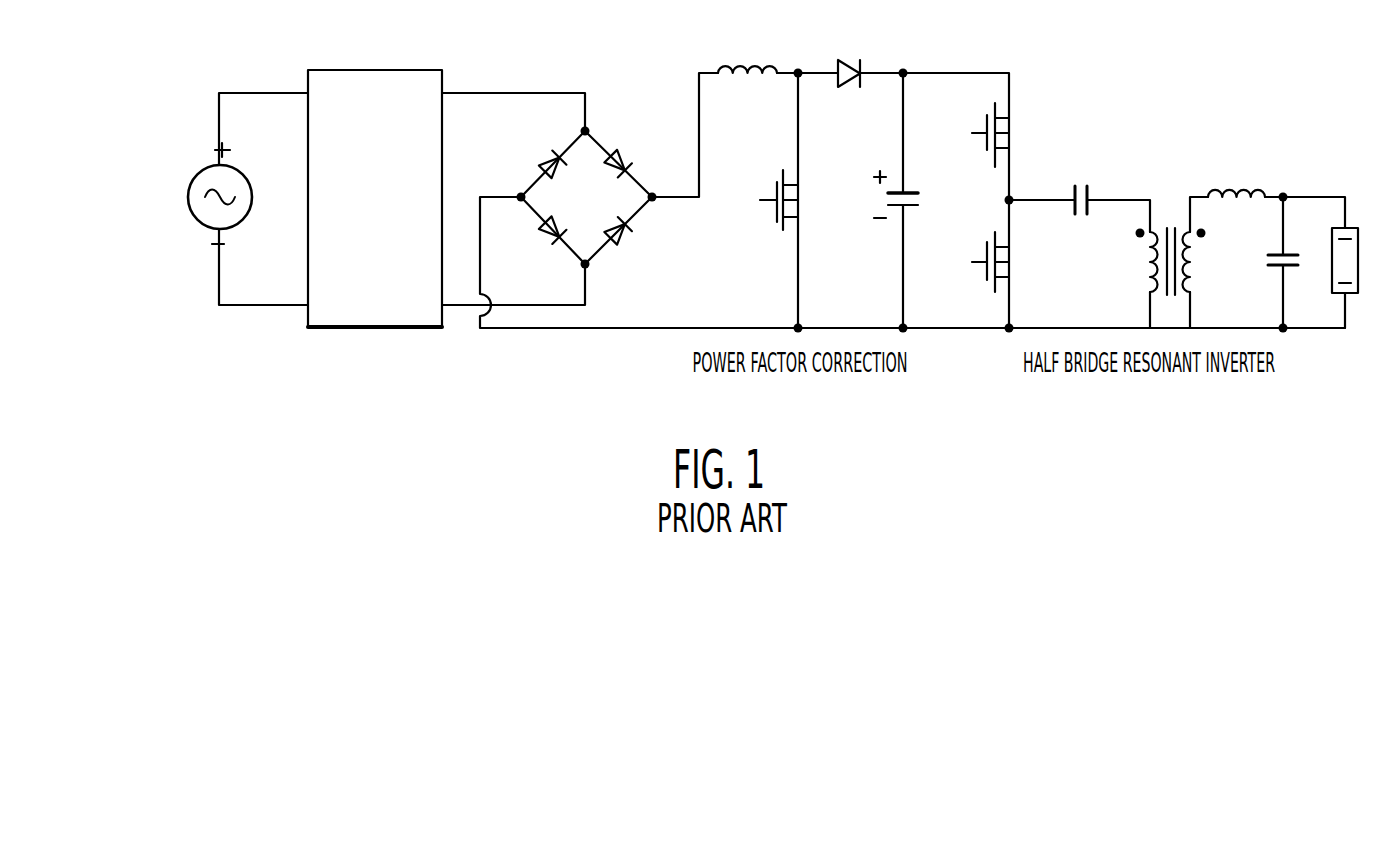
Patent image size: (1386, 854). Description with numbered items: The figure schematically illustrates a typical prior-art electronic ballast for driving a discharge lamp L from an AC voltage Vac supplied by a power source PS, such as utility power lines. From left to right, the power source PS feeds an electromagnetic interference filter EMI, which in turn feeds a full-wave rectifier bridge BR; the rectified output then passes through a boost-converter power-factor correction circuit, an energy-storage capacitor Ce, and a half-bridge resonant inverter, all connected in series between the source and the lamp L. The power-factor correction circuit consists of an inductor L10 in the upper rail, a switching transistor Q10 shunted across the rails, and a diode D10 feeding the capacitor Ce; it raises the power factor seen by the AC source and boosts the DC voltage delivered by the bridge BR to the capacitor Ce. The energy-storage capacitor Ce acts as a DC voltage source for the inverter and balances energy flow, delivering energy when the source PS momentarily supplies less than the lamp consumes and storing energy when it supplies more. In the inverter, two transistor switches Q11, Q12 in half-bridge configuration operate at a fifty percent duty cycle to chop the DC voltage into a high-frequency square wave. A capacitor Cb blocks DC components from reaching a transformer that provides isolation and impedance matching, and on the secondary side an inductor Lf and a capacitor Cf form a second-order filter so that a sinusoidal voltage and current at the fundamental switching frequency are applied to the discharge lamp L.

The power source PS is at (216, 181).
The AC voltage Vac is at (189, 193).
The electromagnetic interference filter EMI is at (375, 198).
The full-wave rectifier bridge BR is at (586, 197).
The inductor L10 is at (747, 50).
The diode D10 is at (852, 55).
The switching transistor Q10 is at (803, 200).
The energy-storage capacitor Ce is at (910, 200).
The transistor switch Q11 is at (1013, 135).
The transistor switch Q12 is at (1013, 262).
The capacitor Cb is at (1098, 189).
The inductor Lf is at (1236, 175).
The capacitor Cf is at (1277, 262).
The discharge lamp L is at (1354, 260).